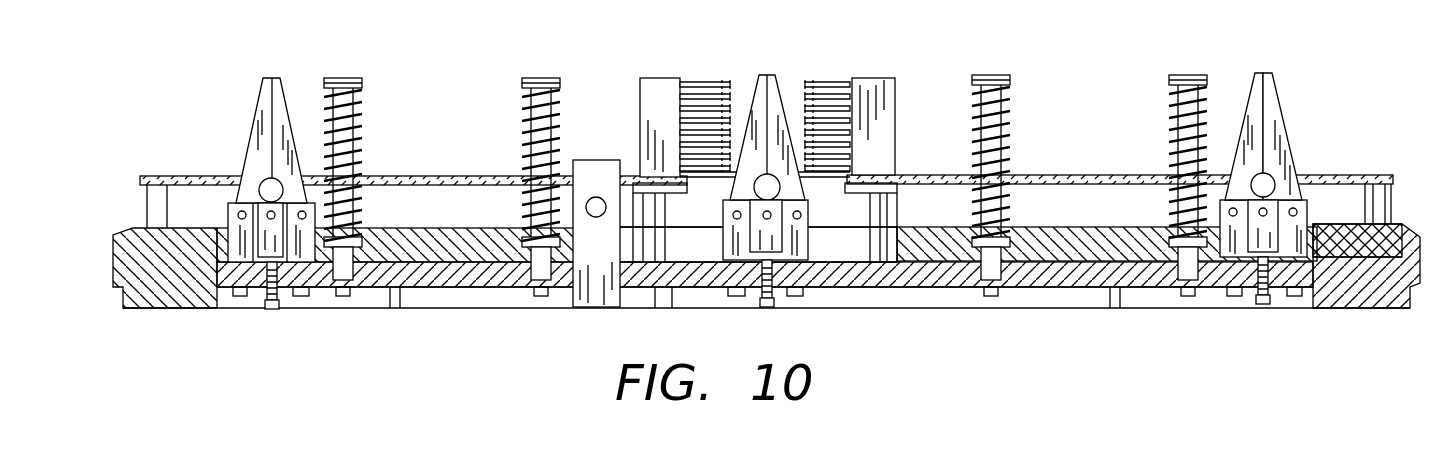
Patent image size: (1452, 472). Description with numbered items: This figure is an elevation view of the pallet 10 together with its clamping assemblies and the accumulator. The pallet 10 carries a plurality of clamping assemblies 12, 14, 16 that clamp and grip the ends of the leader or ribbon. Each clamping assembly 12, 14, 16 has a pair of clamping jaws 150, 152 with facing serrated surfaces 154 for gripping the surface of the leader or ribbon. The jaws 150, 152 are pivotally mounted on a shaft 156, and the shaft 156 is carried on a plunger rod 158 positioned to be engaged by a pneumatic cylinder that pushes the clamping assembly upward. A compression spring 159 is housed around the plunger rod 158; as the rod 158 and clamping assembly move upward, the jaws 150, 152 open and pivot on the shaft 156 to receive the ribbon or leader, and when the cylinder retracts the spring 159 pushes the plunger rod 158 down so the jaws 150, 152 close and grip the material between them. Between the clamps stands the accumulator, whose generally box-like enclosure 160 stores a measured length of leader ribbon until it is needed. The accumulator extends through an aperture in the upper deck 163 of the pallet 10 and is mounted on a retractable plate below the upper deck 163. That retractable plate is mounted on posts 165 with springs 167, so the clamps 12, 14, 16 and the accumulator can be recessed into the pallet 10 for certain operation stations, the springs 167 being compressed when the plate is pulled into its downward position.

The pallet 10 is at (732, 254).
The clamping assembly 12 is at (262, 113).
The clamping assembly 14 is at (760, 92).
The clamping assembly 16 is at (1276, 192).
The clamping jaw 150 is at (1252, 92).
The clamping jaw 152 is at (1272, 102).
The serrated surfaces 154 is at (1273, 87).
The shaft 156 is at (1265, 185).
The plunger rod 158 is at (1307, 270).
The compression spring 159 is at (1257, 282).
The box-like enclosure 160 is at (870, 83).
The upper deck 163 is at (465, 177).
The posts 165 is at (381, 164).
The springs 167 is at (362, 122).